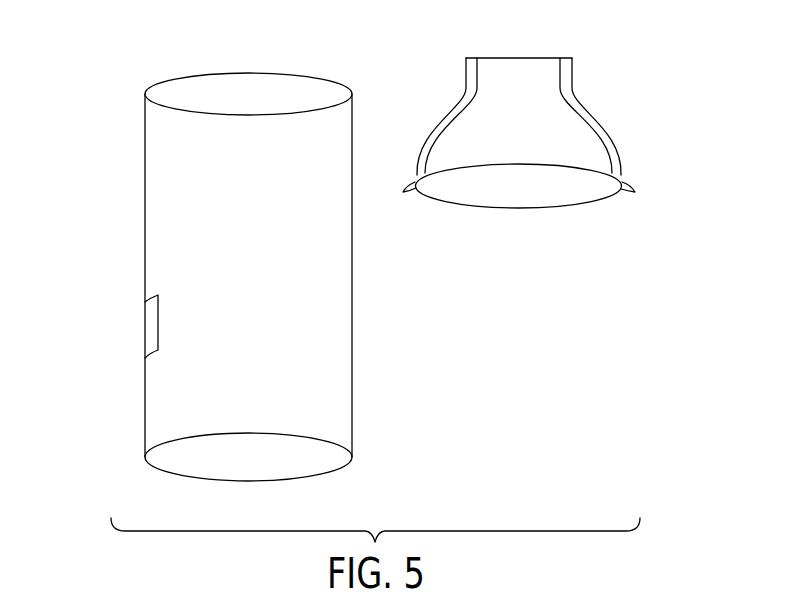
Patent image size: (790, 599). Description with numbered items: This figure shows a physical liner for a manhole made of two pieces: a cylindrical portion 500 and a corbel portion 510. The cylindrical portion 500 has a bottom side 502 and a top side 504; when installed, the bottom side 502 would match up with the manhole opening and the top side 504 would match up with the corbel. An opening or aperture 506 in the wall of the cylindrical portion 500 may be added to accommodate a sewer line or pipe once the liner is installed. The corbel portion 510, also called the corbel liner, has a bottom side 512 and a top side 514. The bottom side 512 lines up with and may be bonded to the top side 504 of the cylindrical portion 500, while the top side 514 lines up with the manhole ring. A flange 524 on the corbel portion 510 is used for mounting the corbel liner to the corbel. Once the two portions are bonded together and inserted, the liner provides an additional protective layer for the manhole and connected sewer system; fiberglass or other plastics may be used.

The cylindrical portion 500 is at (203, 269).
The bottom side 502 is at (225, 458).
The top side 504 is at (276, 80).
The opening or aperture 506 is at (145, 325).
The corbel portion 510 is at (544, 134).
The bottom side 512 is at (518, 190).
The top side 514 is at (517, 72).
The flange 524 is at (630, 193).